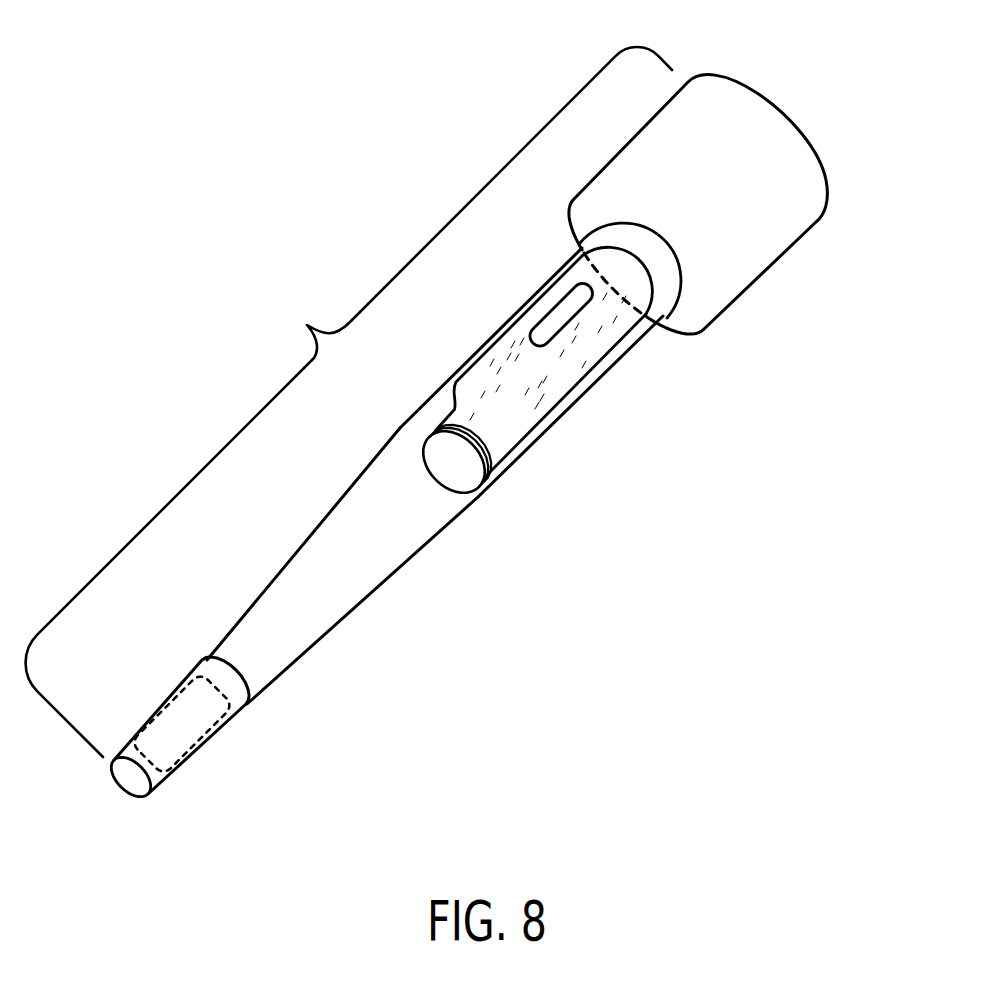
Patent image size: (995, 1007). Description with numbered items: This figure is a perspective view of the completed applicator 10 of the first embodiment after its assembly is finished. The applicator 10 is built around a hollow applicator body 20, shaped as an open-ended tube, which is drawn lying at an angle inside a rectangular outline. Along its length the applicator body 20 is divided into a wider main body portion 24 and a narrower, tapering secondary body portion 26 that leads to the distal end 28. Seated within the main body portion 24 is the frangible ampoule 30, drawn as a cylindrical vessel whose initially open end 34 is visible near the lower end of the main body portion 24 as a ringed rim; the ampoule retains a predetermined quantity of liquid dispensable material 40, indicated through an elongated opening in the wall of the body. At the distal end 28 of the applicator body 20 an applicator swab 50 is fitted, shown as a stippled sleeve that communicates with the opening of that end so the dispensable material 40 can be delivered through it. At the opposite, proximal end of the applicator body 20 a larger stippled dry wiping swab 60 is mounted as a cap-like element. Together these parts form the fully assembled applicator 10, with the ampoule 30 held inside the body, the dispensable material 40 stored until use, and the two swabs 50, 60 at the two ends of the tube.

The applicator 10 is at (349, 402).
The applicator body 20 is at (417, 362).
The main body portion 24 is at (543, 433).
The secondary body portion 26 is at (357, 610).
The distal end 28 is at (157, 797).
The frangible ampoule 30 is at (575, 395).
The initially open end 34 is at (470, 482).
The dispensable material 40 is at (597, 318).
The applicator swab 50 is at (226, 754).
The dry wiping swab 60 is at (780, 253).